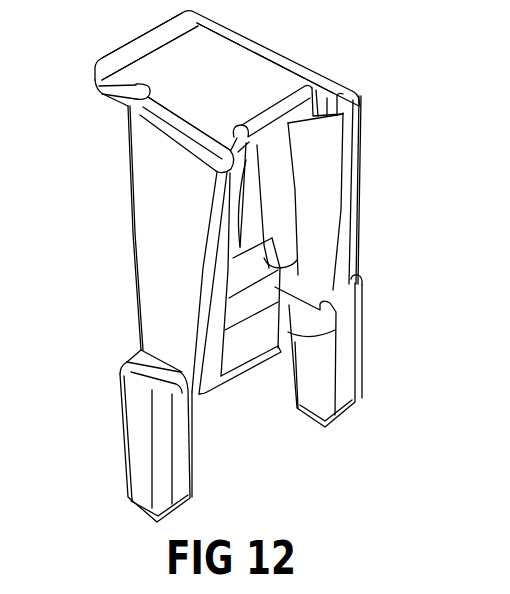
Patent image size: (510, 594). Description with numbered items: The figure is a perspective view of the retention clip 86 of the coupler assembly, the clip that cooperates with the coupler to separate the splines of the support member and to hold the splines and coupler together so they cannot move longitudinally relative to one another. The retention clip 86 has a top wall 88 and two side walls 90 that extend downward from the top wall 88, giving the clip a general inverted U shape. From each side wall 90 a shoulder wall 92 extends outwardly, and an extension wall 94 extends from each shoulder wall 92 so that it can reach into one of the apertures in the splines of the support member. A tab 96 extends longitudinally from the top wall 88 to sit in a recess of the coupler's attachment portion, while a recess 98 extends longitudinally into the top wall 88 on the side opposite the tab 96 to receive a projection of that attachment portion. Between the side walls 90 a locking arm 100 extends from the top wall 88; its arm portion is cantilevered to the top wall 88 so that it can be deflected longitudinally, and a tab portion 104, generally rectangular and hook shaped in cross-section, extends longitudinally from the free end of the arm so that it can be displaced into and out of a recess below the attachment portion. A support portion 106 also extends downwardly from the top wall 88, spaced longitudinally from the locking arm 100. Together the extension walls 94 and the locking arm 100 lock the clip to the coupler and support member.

The retention clip 86 is at (313, 60).
The top wall 88 is at (237, 77).
The side walls 90 is at (170, 238).
The shoulder wall 92 is at (139, 352).
The extension wall 94 is at (140, 447).
The tab 96 is at (170, 51).
The recess 98 is at (283, 123).
The locking arm 100 is at (335, 330).
The tab portion 104 is at (243, 370).
The support portion 106 is at (283, 208).